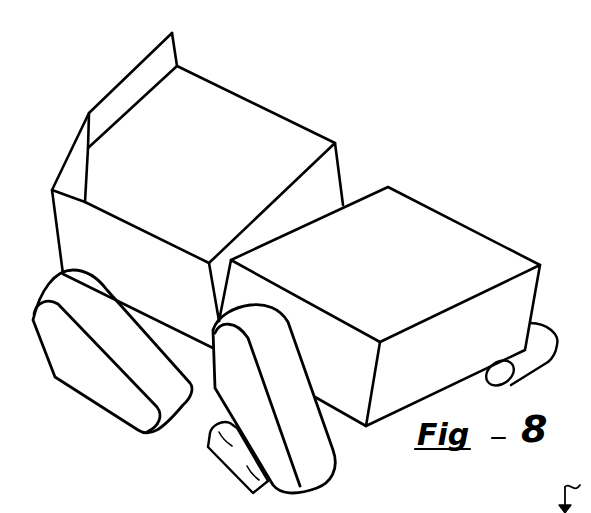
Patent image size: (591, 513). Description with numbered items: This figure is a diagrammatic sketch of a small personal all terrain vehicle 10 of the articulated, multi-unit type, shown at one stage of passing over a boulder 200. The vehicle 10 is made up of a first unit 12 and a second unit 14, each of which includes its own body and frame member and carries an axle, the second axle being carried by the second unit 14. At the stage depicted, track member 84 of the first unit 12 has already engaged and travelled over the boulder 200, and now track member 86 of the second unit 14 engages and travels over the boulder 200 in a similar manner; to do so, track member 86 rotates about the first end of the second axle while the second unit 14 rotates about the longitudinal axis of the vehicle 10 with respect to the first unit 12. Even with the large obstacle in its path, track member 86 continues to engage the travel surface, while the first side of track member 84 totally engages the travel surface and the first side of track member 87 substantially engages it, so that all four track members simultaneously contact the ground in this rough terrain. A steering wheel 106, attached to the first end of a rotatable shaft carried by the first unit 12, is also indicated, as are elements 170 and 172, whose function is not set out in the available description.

The all terrain vehicle 10 is at (450, 200).
The first unit 12 is at (282, 113).
The second unit 14 is at (482, 232).
The track member 84 is at (47, 297).
The track member 86 is at (334, 453).
The track member 87 is at (548, 362).
The steering wheel 106 is at (10, 436).
The support member 170 is at (374, 506).
The support member 172 is at (529, 506).
The boulder 200 is at (222, 458).